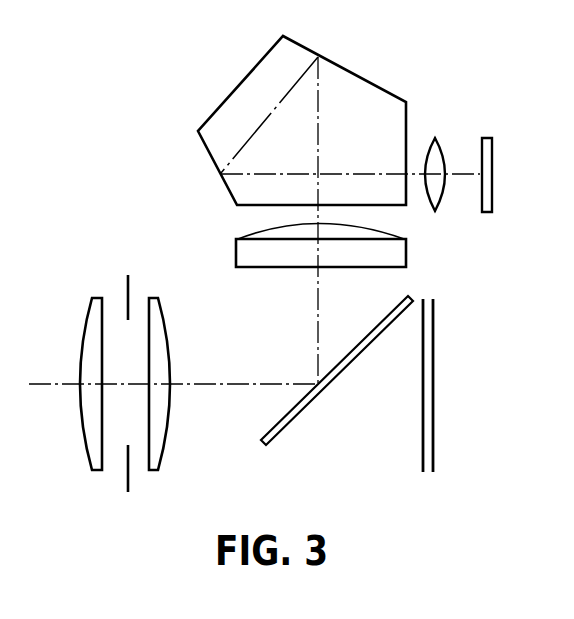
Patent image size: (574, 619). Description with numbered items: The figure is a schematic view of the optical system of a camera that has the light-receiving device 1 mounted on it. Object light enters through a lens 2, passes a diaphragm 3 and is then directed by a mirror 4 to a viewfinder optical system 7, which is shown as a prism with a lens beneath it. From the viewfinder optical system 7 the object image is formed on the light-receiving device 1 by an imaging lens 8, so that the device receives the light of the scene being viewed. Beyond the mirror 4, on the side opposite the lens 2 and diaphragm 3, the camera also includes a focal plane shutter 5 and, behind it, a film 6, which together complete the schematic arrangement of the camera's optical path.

The light-receiving device 1 is at (488, 138).
The lens 2 is at (100, 295).
The diaphragm 3 is at (129, 475).
The mirror 4 is at (352, 362).
The focal plane shutter 5 is at (422, 431).
The film 6 is at (435, 408).
The viewfinder optical system 7 is at (183, 28).
The imaging lens 8 is at (437, 140).